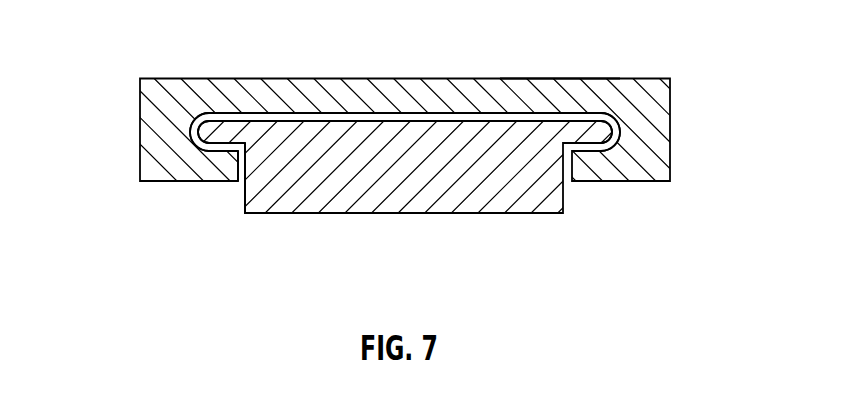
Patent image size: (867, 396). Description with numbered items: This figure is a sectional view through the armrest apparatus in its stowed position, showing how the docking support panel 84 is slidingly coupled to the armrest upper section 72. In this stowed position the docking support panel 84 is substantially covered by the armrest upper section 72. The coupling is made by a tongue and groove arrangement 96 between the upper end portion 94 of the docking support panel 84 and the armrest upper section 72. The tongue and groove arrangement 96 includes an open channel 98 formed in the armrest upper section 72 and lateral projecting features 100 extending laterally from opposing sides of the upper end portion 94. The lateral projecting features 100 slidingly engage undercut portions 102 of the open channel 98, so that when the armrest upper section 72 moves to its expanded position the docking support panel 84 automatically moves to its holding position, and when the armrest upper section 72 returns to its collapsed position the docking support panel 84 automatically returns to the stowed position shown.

The armrest upper section 72 is at (485, 78).
The docking support panel 84 is at (260, 198).
The upper end portion 94 is at (530, 203).
The tongue and groove arrangement 96 is at (563, 60).
The open channel 98 is at (229, 202).
The lateral projecting features 100 is at (209, 131).
The undercut portions 102 is at (197, 130).